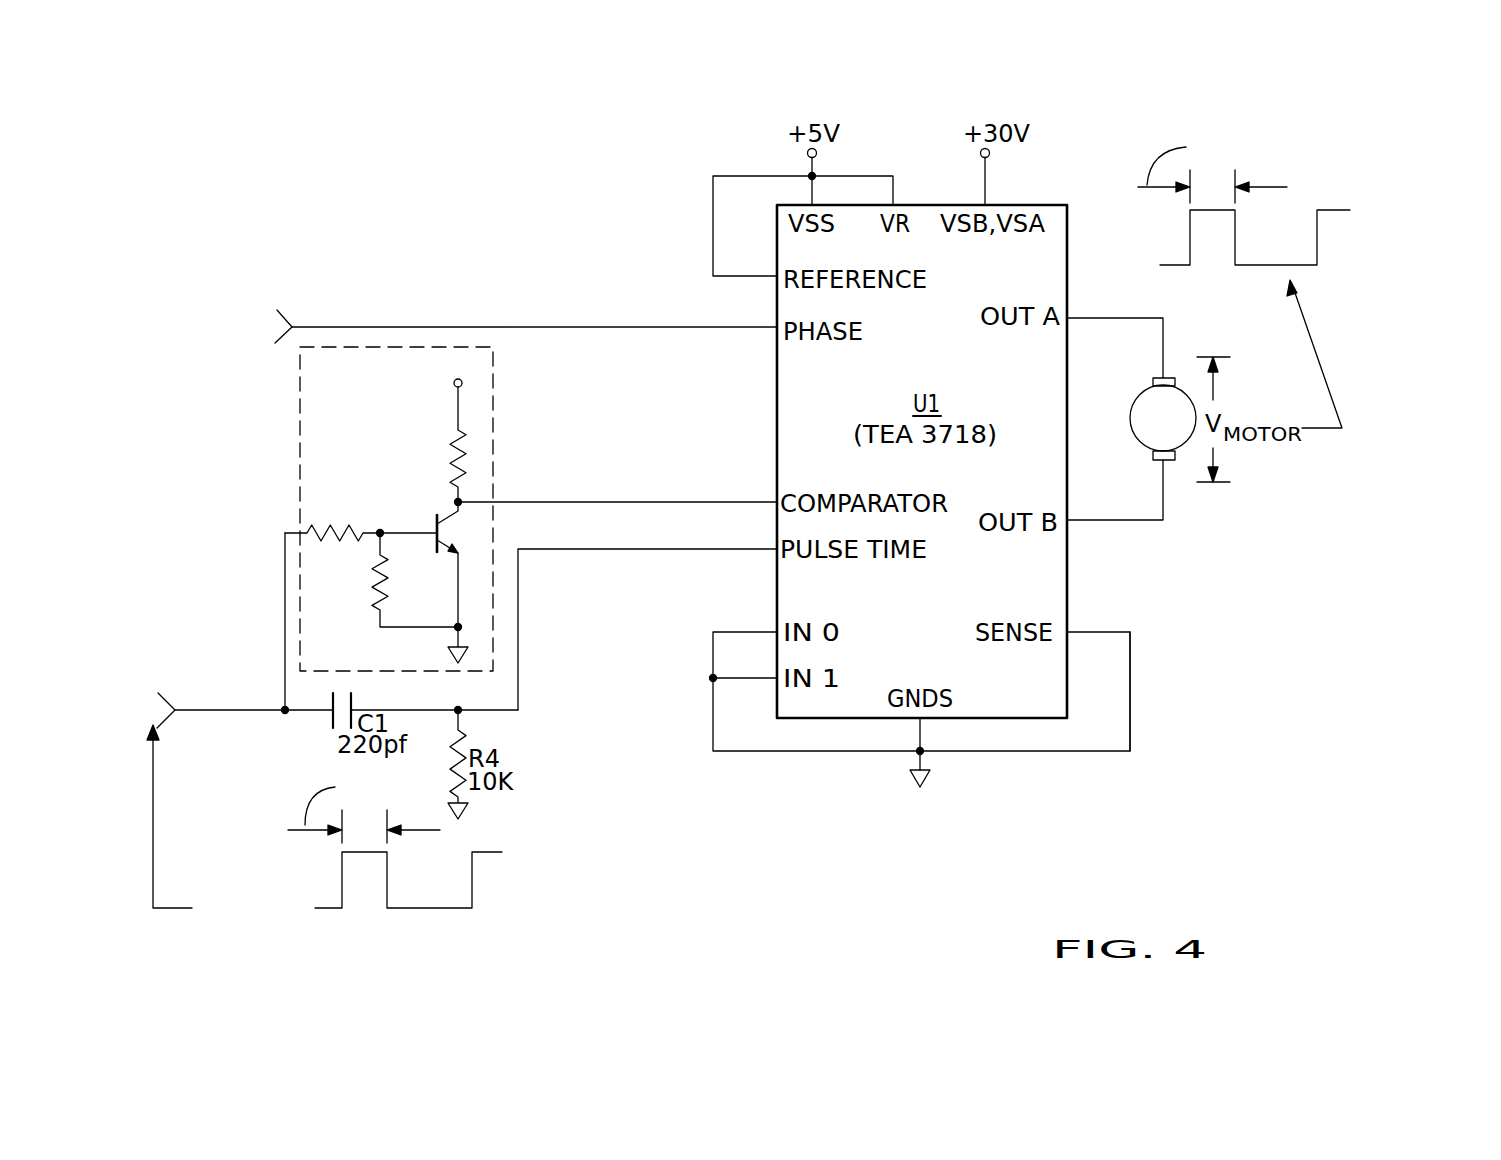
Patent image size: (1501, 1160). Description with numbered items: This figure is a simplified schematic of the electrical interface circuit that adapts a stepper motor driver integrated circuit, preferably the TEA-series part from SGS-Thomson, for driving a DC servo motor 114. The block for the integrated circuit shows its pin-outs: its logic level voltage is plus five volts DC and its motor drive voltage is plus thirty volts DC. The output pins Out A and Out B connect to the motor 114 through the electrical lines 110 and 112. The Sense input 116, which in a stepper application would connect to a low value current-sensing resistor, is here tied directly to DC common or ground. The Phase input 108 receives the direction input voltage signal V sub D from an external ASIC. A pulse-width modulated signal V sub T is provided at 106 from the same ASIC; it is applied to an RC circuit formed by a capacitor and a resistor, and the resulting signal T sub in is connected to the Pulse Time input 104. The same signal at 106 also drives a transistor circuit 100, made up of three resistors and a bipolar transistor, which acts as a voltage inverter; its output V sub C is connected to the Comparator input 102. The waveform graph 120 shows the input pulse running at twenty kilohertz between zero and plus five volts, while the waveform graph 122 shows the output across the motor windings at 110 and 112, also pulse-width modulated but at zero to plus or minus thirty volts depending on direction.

The transistor circuit 100 is at (495, 365).
The Comparator input 102 is at (600, 503).
The Pulse Time input 104 is at (595, 549).
The pulse-width modulated signal V_T 106 is at (267, 708).
The Phase input 108 is at (357, 327).
The electrical line 110 is at (1082, 320).
The electrical line 112 is at (1080, 519).
The DC servo motor M2 114 is at (1130, 417).
The Sense input 116 is at (1130, 678).
The waveform graph 120 is at (602, 837).
The waveform graph 122 is at (1337, 277).